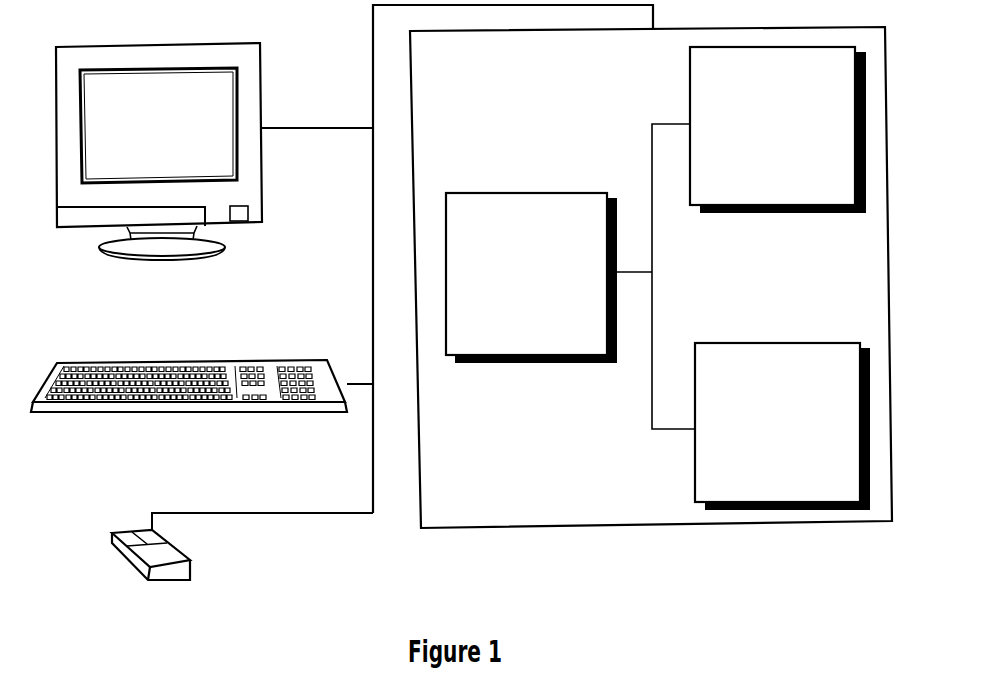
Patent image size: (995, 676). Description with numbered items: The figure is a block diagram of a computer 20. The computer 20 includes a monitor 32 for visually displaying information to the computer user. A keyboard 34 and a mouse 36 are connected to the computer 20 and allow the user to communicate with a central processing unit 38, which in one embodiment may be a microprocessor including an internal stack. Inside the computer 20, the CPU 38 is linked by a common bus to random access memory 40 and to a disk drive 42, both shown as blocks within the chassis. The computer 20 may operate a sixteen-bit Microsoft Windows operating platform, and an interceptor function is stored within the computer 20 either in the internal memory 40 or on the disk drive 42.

The computer 20 is at (688, 556).
The monitor 32 is at (122, 45).
The keyboard 34 is at (130, 365).
The mouse 36 is at (130, 533).
The central processing unit 38 is at (517, 300).
The random access memory 40 is at (790, 152).
The disk drive 42 is at (794, 462).